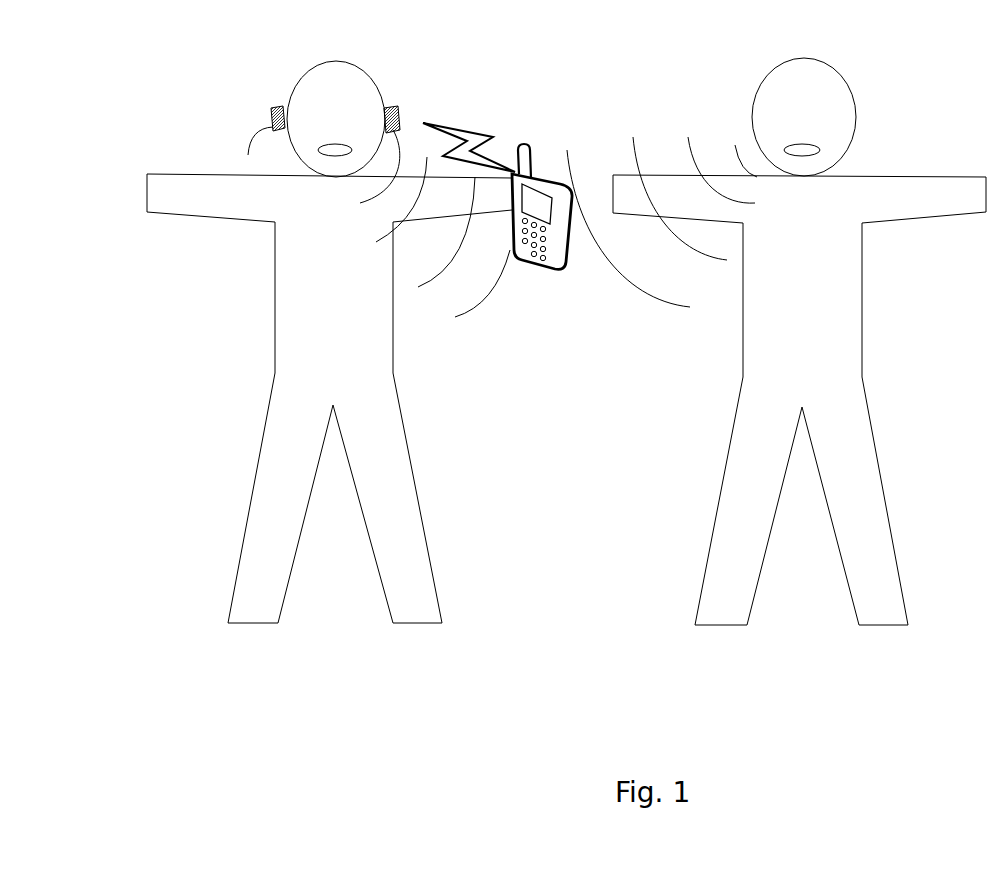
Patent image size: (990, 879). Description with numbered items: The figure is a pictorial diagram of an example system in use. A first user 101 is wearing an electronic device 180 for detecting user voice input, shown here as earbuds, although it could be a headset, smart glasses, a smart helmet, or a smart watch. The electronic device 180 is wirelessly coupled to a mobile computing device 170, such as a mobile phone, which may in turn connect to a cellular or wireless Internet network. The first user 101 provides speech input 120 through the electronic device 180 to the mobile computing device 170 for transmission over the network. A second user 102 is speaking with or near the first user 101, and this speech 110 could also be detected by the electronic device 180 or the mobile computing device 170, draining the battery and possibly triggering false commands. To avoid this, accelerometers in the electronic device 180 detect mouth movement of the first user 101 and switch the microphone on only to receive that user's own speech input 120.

The first user 101 is at (329, 342).
The second user 102 is at (799, 341).
The speech of the second user 110 is at (633, 137).
The speech input 120 is at (462, 287).
The mobile computing device 170 is at (567, 280).
The electronic device 180 is at (273, 104).